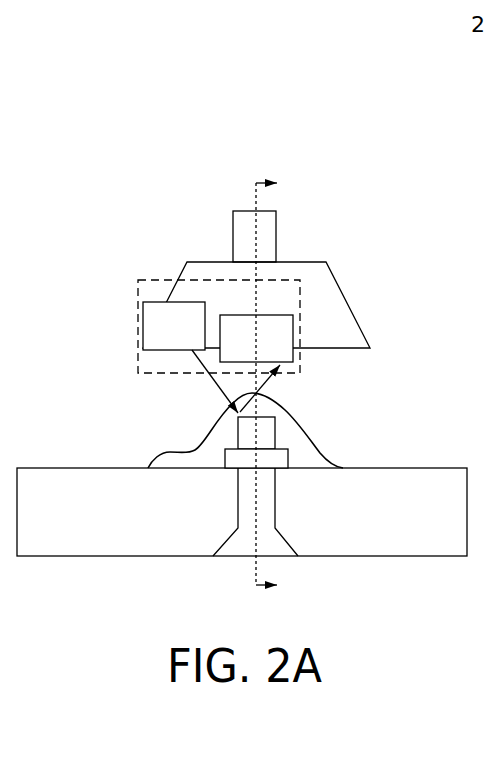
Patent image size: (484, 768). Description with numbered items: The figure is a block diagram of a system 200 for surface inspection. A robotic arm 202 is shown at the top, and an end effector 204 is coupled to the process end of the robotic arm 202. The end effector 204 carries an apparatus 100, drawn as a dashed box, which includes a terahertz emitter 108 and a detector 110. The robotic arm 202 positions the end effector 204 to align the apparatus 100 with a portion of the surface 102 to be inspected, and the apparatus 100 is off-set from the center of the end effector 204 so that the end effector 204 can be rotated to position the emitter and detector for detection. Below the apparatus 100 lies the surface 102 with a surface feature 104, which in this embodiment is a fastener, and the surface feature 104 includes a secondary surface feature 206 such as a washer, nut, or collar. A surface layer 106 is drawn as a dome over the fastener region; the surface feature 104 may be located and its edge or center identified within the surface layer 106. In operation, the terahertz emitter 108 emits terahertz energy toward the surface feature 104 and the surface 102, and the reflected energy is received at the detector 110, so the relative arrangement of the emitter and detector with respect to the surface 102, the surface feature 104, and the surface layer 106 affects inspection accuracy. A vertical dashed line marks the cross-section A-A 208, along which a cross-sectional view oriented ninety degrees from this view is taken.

The system 200 is at (138, 80).
The apparatus 100 is at (138, 289).
The surface 102 is at (415, 467).
The surface feature 104 is at (237, 438).
The surface layer 106 is at (320, 442).
The terahertz emitter 108 is at (158, 338).
The detector 110 is at (240, 349).
The robotic arm 202 is at (277, 242).
The end effector 204 is at (348, 303).
The secondary surface feature 206 is at (225, 460).
The cross-section A-A 208 is at (255, 193).